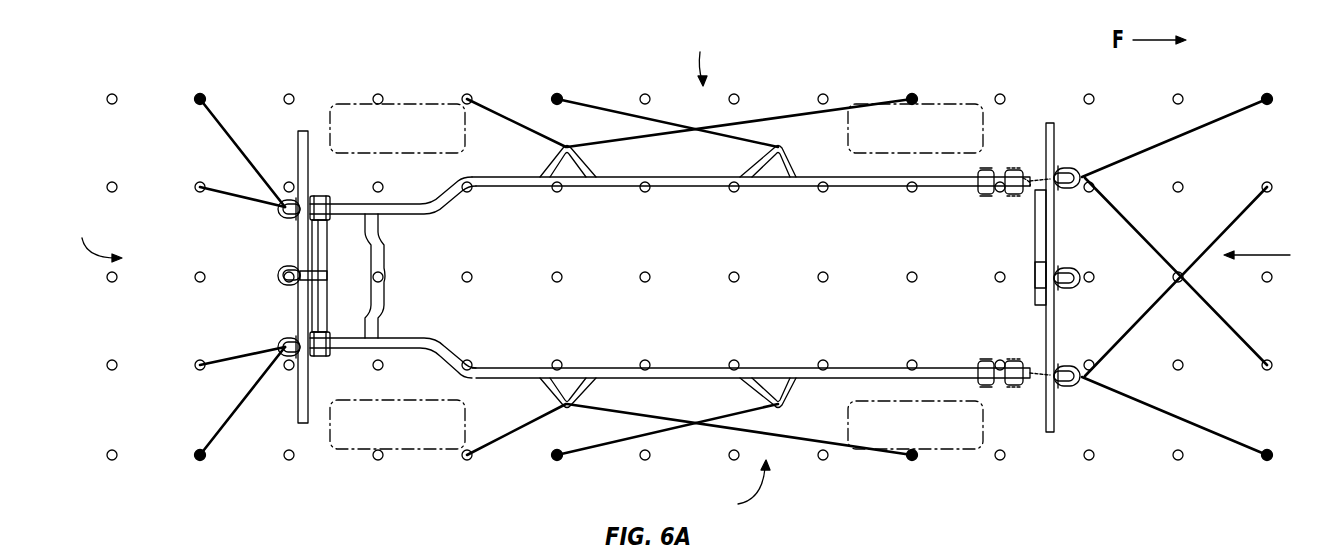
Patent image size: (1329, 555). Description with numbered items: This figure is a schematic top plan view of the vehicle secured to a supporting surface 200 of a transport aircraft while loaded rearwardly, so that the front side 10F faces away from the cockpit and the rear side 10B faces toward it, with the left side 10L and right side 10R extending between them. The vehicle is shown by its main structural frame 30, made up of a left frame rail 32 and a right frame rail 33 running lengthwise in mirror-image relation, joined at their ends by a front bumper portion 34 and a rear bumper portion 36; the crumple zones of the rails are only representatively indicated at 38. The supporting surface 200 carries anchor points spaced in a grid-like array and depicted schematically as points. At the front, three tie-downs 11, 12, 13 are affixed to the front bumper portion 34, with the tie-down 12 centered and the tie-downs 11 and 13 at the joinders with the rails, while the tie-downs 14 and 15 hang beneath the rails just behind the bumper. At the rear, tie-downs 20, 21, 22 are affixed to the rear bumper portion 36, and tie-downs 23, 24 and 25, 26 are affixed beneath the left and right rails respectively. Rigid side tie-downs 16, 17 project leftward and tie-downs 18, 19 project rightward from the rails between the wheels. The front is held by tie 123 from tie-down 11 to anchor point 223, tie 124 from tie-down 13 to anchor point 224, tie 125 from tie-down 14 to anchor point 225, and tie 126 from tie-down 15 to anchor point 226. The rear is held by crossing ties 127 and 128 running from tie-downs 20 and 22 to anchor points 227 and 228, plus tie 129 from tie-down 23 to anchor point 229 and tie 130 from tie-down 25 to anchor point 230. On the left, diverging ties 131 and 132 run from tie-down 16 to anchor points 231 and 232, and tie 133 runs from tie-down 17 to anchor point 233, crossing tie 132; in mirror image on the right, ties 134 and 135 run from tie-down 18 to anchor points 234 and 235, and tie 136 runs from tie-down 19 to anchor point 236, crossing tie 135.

The front side 10F is at (94, 236).
The rear side 10B is at (1273, 254).
The right side 10R is at (702, 56).
The left side 10L is at (738, 490).
The tie-down 11 is at (279, 343).
The tie-down 12 is at (278, 273).
The tie-down 13 is at (276, 212).
The tie-down 14 is at (318, 356).
The tie-down 15 is at (312, 196).
The tie-down 16 is at (568, 408).
The tie-down 17 is at (782, 408).
The tie-down 18 is at (565, 146).
The tie-down 19 is at (783, 147).
The tie-down 20 is at (1088, 381).
The tie-down 21 is at (1084, 281).
The tie-down 22 is at (1086, 173).
The tie-down 23 is at (1020, 359).
The tie-down 24 is at (985, 359).
The tie-down 25 is at (1020, 196).
The tie-down 26 is at (985, 196).
The main structural frame 30 is at (670, 277).
The left frame rail 32 is at (863, 367).
The right frame rail 33 is at (847, 186).
The front bumper portion 34 is at (298, 400).
The rear bumper portion 36 is at (1048, 338).
The crumple zones 38 is at (426, 219).
The tie 123 is at (233, 413).
The tie 124 is at (245, 157).
The tie 125 is at (216, 360).
The tie 126 is at (222, 194).
The tie 127 is at (1125, 337).
The tie 128 is at (1150, 242).
The tie 129 is at (1170, 420).
The tie 130 is at (1156, 145).
The tie 131 is at (528, 425).
The tie 132 is at (645, 410).
The tie 133 is at (660, 434).
The tie 134 is at (507, 118).
The tie 135 is at (782, 117).
The tie 136 is at (661, 120).
The supporting surface 200 is at (94, 348).
The anchor point 223 is at (196, 455).
The anchor point 224 is at (196, 100).
The anchor point 225 is at (197, 370).
The anchor point 226 is at (196, 188).
The anchor point 227 is at (1272, 187).
The anchor point 228 is at (1267, 359).
The anchor point 229 is at (1266, 450).
The anchor point 230 is at (1271, 102).
The anchor point 231 is at (466, 461).
The anchor point 232 is at (911, 462).
The anchor point 233 is at (557, 462).
The anchor point 234 is at (464, 96).
The anchor point 235 is at (912, 95).
The anchor point 236 is at (559, 95).